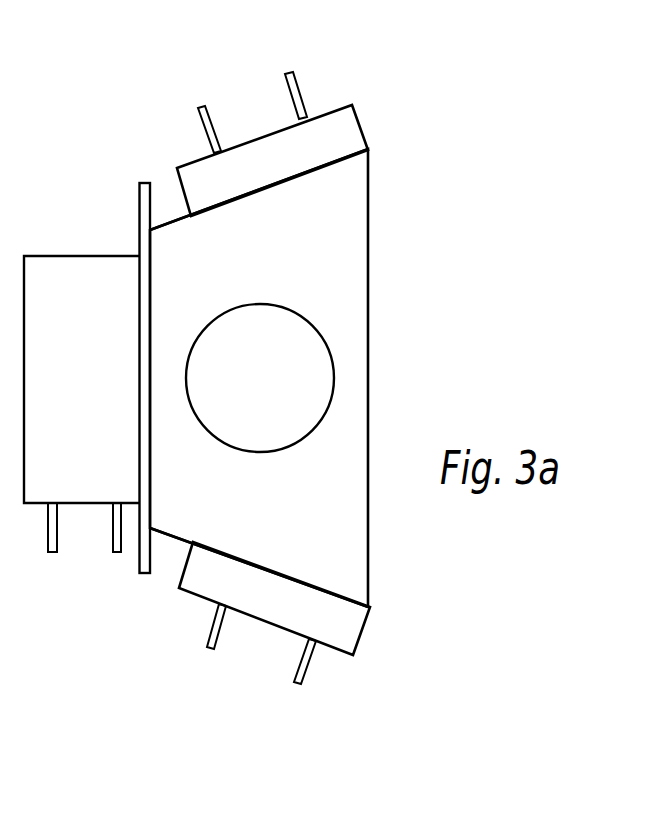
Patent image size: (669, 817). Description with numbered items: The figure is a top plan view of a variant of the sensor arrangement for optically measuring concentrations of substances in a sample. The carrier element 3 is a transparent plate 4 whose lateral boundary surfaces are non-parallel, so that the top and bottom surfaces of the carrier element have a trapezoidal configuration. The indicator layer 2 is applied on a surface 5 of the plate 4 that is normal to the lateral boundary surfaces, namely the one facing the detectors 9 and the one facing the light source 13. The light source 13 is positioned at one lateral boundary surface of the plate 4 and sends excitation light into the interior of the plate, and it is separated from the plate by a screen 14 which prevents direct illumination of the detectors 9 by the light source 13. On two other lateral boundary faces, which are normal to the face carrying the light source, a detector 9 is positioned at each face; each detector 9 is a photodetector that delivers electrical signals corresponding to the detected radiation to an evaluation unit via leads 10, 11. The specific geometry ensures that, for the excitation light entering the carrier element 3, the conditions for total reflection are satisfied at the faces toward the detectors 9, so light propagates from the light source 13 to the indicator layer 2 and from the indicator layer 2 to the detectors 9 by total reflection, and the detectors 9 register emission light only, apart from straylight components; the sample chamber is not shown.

The indicator layer 2 is at (264, 386).
The carrier element 3 is at (370, 363).
The plate 4 is at (343, 519).
The surface 5 is at (343, 272).
The detector 9 is at (300, 135).
The lead 10 is at (215, 648).
The lead 11 is at (298, 685).
The light source 13 is at (93, 403).
The screen 14 is at (147, 575).